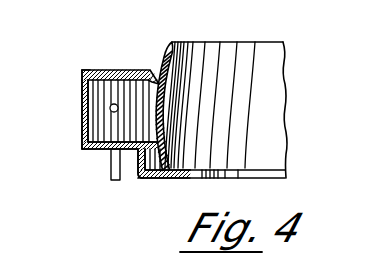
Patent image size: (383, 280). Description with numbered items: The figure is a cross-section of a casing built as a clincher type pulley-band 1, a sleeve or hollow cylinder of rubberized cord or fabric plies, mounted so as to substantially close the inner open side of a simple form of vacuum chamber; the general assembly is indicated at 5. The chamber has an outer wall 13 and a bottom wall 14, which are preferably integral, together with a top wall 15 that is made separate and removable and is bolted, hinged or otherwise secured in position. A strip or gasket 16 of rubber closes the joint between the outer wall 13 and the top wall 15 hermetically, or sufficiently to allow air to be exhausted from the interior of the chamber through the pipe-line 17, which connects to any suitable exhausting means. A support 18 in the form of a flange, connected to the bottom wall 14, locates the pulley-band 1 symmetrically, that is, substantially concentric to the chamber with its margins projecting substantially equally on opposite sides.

The clincher type pulley-band 1 is at (162, 29).
The cap 5 is at (82, 150).
The outer wall 13 is at (82, 118).
The bottom wall 14 is at (104, 150).
The top wall 15 is at (112, 70).
The gasket 16 is at (82, 75).
The pipe-line 17 is at (116, 181).
The support 18 is at (163, 178).